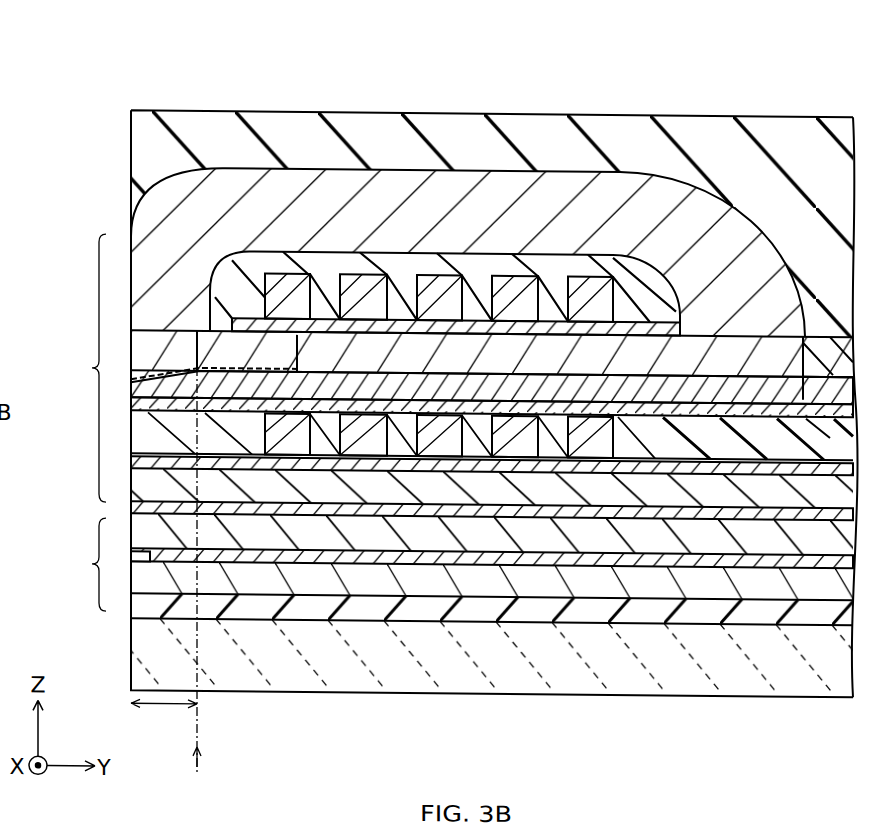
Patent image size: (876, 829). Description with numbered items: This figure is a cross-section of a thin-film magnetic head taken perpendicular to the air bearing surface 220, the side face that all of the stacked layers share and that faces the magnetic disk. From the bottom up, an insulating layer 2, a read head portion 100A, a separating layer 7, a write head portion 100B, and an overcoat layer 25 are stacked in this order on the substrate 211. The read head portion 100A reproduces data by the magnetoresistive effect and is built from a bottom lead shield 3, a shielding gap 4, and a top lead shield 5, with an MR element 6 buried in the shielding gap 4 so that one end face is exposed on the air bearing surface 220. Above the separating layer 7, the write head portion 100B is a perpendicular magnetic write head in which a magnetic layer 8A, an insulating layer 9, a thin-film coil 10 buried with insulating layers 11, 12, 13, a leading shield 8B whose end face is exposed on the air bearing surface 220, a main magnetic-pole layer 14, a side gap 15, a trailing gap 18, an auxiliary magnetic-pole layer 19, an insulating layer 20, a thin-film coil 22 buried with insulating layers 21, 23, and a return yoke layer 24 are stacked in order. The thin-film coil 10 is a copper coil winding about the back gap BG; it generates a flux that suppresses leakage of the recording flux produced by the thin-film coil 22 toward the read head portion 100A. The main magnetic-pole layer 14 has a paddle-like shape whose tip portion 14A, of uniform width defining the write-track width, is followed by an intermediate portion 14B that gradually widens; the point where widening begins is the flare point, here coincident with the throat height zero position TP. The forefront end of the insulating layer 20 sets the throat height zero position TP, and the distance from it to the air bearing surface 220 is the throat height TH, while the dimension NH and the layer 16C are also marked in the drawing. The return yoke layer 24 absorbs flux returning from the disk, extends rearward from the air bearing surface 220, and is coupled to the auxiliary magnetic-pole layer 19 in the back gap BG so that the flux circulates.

The air bearing surface 220 is at (121, 168).
The overcoat layer 25 is at (814, 122).
The return yoke layer 24 is at (233, 195).
The main magnetic-pole layer 14 is at (288, 42).
The tip portion 14A is at (285, 298).
The intermediate portion 14B is at (362, 298).
The insulating layer 23 is at (640, 285).
The thin-film coil 22 is at (517, 280).
The insulating layer 21 is at (580, 300).
The insulating layer 16C is at (158, 424).
The auxiliary magnetic-pole layer 19 is at (450, 340).
The leading shield 8B is at (148, 388).
The back gap BG is at (720, 302).
The trailing gap 18 is at (277, 427).
The insulating layer 13 is at (357, 402).
The insulating layer 20 is at (227, 344).
The insulating layer 11 is at (403, 436).
The thin-film coil 10 is at (440, 439).
The insulating layer 9 is at (487, 475).
The magnetic layer 8A is at (527, 495).
The separating layer 7 is at (572, 540).
The top lead shield 5 is at (612, 554).
The shielding gap 4 is at (660, 558).
The bottom lead shield 3 is at (700, 576).
The insulating layer 2 is at (737, 605).
The substrate 211 is at (770, 665).
The insulating layer 12 is at (820, 382).
The side gap 15 is at (805, 437).
The MR element 6 is at (131, 557).
The write head portion 100B is at (70, 367).
The read head portion 100A is at (70, 564).
The throat height TH is at (164, 718).
The height NH is at (170, 570).
The throat height zero position TP is at (195, 771).